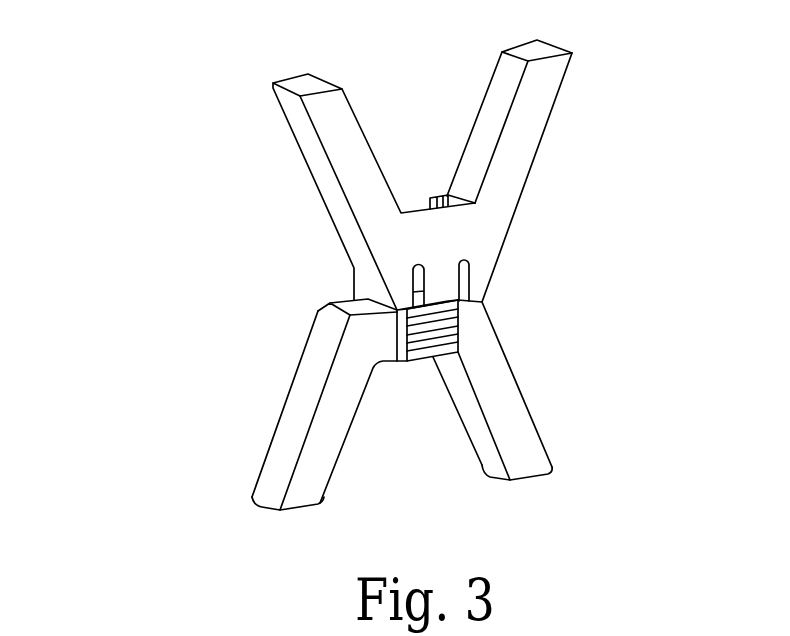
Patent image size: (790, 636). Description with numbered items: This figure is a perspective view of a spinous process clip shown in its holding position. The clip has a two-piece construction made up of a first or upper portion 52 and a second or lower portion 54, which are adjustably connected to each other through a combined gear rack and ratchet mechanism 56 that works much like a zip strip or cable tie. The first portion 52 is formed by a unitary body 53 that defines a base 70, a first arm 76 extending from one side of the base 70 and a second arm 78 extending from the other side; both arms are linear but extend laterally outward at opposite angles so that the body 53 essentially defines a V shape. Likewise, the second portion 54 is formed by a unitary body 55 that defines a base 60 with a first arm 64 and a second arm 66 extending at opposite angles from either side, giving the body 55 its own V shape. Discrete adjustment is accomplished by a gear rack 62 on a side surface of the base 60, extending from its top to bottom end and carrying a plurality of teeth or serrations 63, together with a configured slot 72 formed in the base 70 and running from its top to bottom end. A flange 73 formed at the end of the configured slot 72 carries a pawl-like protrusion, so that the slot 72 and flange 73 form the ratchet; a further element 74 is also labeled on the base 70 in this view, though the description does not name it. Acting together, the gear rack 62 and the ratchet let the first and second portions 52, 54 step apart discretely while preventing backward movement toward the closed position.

The first portion 52 is at (600, 150).
The unitary body 53 is at (333, 197).
The second portion 54 is at (229, 411).
The unitary body 55 is at (299, 386).
The combined gear rack and ratchet mechanism 56 is at (418, 438).
The base 60 is at (363, 330).
The gear rack 62 is at (448, 337).
The teeth 63 is at (417, 352).
The first arm 64 is at (270, 491).
The second arm 66 is at (528, 442).
The base 70 is at (454, 238).
The configured slot 72 is at (427, 181).
The flange 73 is at (414, 290).
The second post 74 is at (465, 280).
The first arm 76 is at (313, 112).
The second arm 78 is at (515, 102).